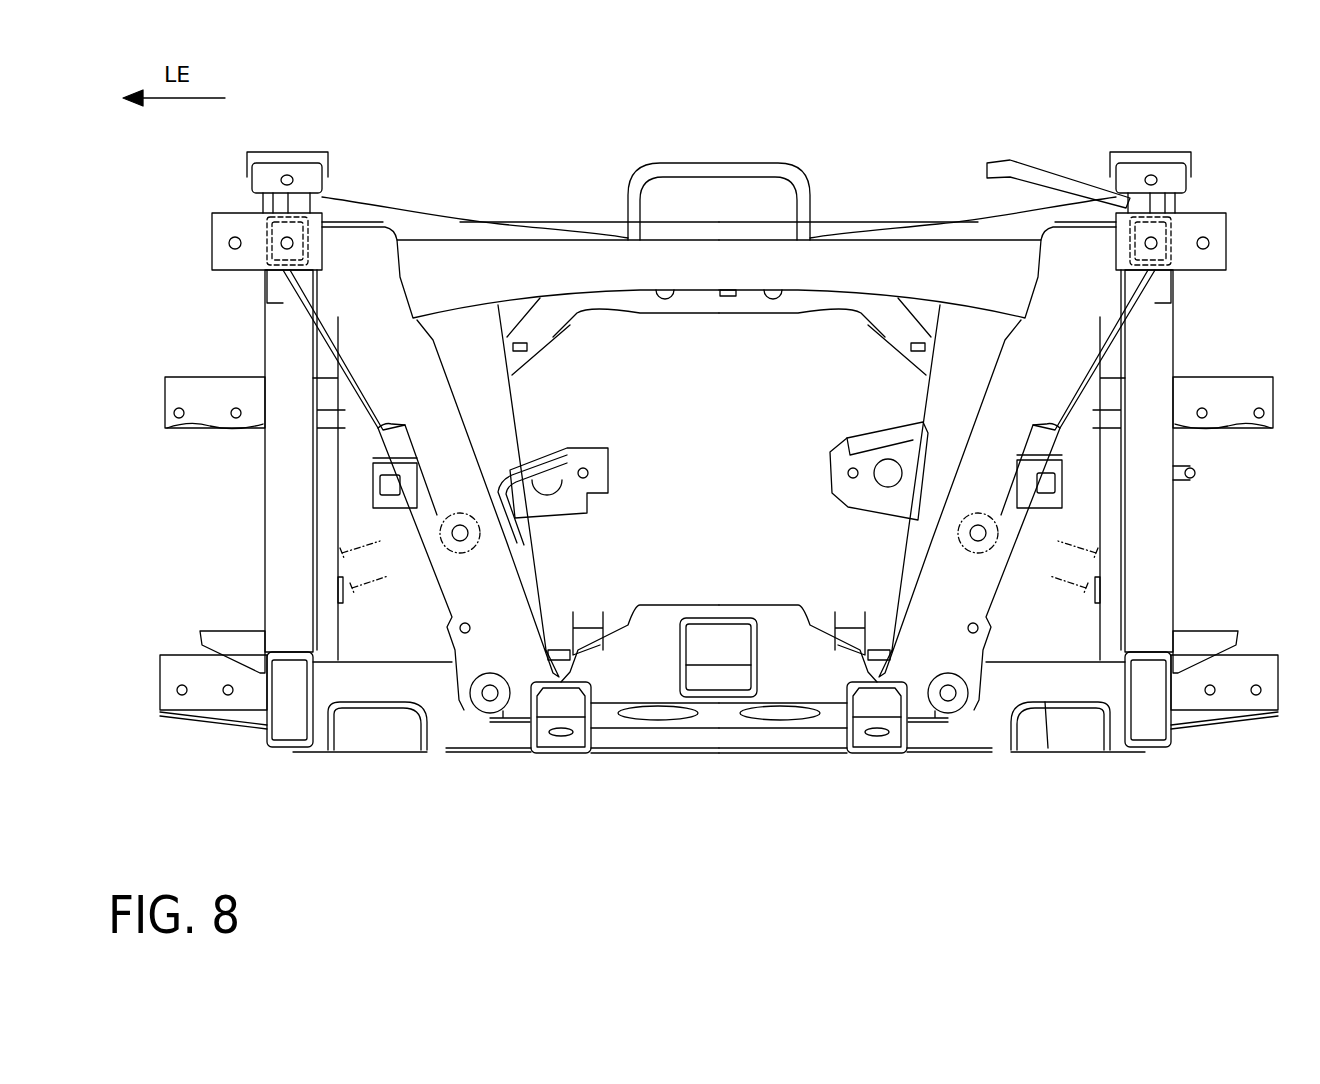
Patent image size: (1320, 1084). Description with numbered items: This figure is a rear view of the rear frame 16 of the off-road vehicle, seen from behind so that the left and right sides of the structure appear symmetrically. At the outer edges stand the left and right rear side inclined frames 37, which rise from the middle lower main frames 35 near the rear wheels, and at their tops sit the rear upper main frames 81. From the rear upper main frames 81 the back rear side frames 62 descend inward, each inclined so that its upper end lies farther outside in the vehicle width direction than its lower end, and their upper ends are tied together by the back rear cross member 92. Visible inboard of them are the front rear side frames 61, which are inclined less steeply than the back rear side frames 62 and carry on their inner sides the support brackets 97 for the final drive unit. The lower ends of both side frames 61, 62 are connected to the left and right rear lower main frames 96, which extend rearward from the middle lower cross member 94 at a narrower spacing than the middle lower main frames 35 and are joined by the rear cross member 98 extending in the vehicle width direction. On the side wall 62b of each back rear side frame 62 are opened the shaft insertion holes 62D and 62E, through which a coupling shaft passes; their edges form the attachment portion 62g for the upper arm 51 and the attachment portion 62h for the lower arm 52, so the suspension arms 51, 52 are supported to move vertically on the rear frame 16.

The rear frame 16 is at (456, 184).
The middle lower main frame 35 is at (263, 733).
The rear side inclined frame 37 is at (278, 340).
The upper arm 51 is at (450, 535).
The lower arm 52 is at (405, 733).
The front rear side frame 61 is at (463, 333).
The back rear side frame 62 is at (380, 435).
The side wall 62b is at (420, 462).
The shaft insertion hole 62D is at (456, 563).
The shaft insertion hole 62E is at (485, 700).
The attachment portion 62g is at (450, 588).
The attachment portion 62h is at (512, 724).
The rear upper main frame 81 is at (267, 245).
The back rear cross member 92 is at (830, 262).
The middle lower cross member 94 is at (1097, 690).
The rear lower main frame 96 is at (565, 755).
The support bracket 97 is at (541, 445).
The rear cross member 98 is at (725, 722).